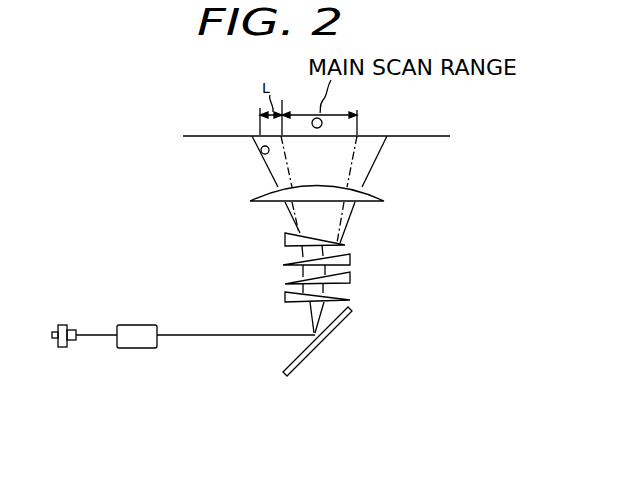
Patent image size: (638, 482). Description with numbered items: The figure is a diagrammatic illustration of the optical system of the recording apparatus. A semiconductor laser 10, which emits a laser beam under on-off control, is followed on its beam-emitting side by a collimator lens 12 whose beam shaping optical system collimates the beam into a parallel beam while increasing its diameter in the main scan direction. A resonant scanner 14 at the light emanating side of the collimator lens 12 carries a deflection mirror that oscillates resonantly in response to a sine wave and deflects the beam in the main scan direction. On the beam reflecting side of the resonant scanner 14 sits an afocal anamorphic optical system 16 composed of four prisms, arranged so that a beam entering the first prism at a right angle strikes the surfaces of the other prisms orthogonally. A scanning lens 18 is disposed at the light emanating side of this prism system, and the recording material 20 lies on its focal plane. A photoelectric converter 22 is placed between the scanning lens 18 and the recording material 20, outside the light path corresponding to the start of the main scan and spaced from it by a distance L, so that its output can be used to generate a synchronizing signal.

The semiconductor laser 10 is at (63, 348).
The collimator lens 12 is at (137, 348).
The resonant scanner 14 is at (318, 343).
The afocal anamorphic optical system 16 is at (355, 268).
The scanning lens 18 is at (363, 203).
The recording material 20 is at (420, 136).
The photoelectric converter 22 is at (261, 153).